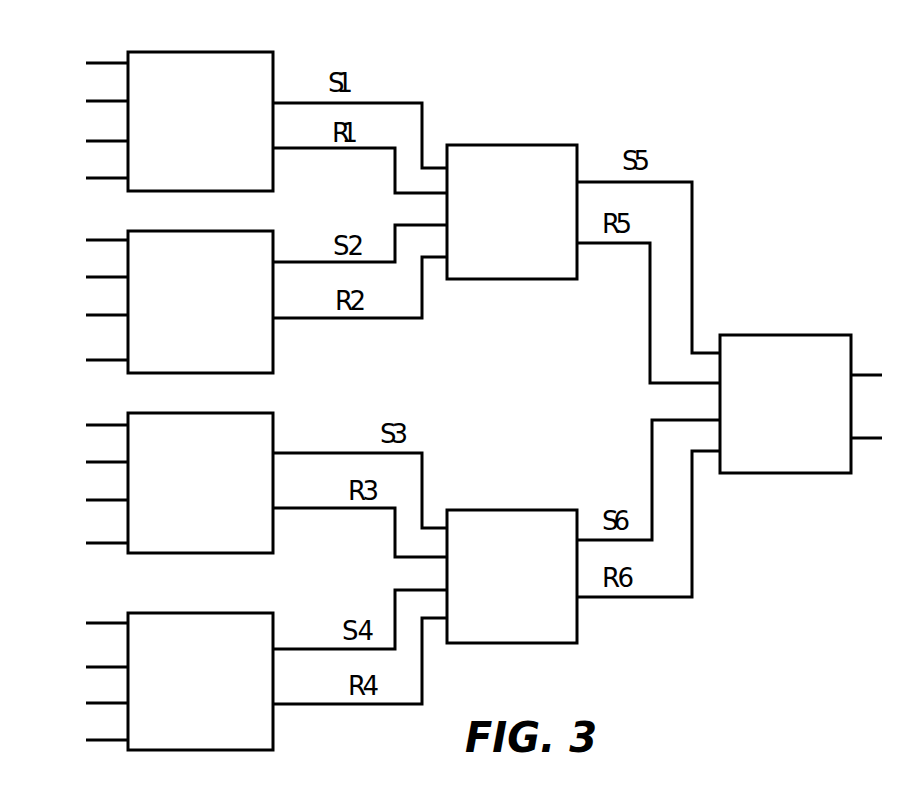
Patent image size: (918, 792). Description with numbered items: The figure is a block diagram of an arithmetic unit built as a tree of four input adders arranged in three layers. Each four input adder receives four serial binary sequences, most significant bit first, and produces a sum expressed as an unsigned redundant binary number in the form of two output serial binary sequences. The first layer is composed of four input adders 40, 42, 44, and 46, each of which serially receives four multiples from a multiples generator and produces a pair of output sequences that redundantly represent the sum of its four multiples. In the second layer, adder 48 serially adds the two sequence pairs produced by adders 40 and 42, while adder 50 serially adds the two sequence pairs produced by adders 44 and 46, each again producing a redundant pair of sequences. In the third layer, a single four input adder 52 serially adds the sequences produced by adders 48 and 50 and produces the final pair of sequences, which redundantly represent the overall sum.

The four input adder 40 is at (217, 52).
The four input adder 42 is at (273, 352).
The four input adder 44 is at (273, 432).
The four input adder 46 is at (250, 613).
The four input adder 48 is at (509, 145).
The four input adder 50 is at (503, 510).
The four input adder 52 is at (775, 335).